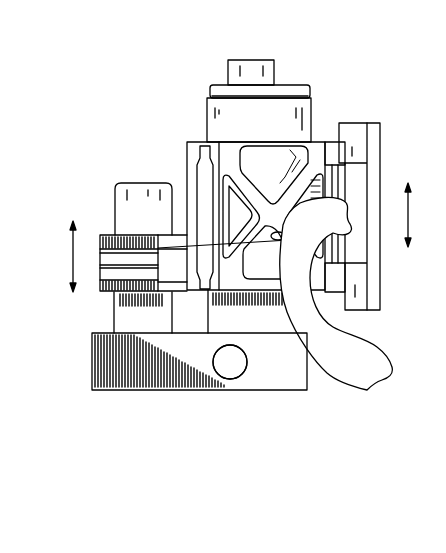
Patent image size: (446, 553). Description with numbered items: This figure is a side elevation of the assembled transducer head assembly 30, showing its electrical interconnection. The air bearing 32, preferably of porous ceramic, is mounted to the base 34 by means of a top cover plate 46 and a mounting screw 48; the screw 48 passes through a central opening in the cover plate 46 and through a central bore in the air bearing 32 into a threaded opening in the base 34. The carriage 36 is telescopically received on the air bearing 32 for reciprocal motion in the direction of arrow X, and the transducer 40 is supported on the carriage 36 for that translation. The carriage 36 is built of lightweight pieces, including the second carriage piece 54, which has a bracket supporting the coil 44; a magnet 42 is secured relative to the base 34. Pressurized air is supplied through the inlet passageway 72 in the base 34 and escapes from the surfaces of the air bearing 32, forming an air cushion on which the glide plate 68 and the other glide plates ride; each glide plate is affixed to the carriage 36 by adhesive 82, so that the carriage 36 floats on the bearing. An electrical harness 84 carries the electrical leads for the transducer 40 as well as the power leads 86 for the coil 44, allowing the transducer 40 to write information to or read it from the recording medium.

The transducer head assembly 30 is at (231, 236).
The air bearing 32 is at (220, 120).
The base 34 is at (108, 370).
The carriage 36 is at (324, 142).
The transducer 40 is at (358, 132).
The magnet 42 is at (128, 203).
The coil 44 is at (110, 292).
The top cover plate 46 is at (218, 87).
The mounting screw 48 is at (258, 66).
The second carriage piece 54 is at (190, 157).
The glide plate 68 is at (274, 175).
The inlet passageway 72 is at (230, 370).
The adhesive 82 is at (220, 166).
The electrical harness 84 is at (365, 355).
The power leads 86 is at (247, 352).